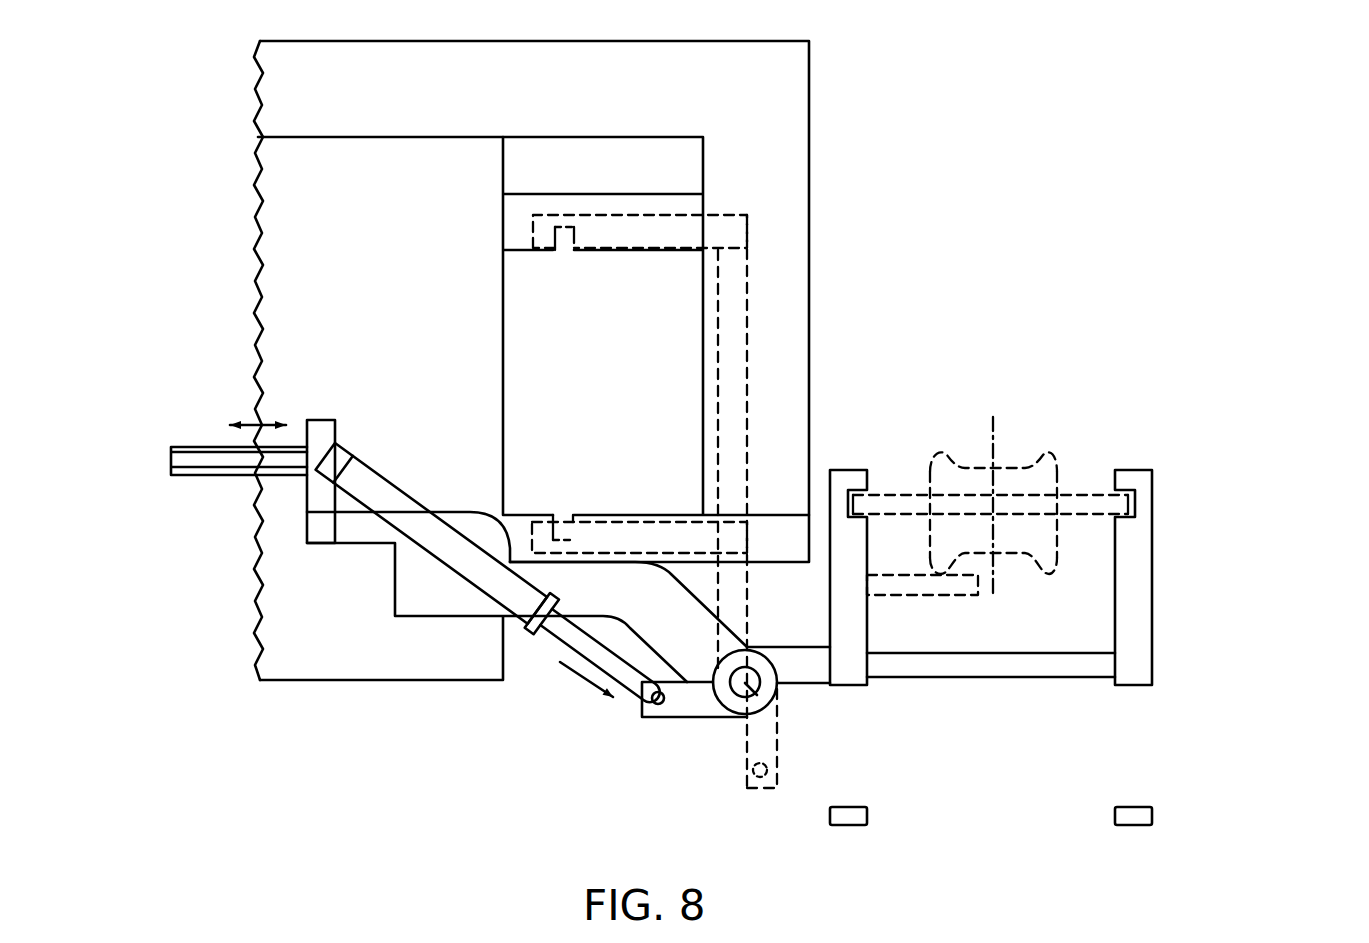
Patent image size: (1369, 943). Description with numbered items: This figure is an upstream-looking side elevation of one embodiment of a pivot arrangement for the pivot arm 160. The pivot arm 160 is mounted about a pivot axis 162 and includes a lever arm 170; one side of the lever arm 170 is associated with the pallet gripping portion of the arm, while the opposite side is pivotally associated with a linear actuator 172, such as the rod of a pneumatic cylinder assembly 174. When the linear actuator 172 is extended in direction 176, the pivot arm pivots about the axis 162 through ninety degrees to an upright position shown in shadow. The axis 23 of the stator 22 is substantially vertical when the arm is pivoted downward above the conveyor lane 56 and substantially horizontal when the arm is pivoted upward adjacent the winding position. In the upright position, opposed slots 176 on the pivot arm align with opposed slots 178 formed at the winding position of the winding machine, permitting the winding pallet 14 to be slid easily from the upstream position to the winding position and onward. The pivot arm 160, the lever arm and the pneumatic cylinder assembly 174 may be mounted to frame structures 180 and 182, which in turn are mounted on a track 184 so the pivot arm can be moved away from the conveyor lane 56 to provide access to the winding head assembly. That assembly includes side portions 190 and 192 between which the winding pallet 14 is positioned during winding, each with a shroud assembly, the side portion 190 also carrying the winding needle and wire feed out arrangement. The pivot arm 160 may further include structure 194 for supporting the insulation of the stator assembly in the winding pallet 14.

The winding pallet 14 is at (878, 490).
The stator 22 is at (1058, 572).
The axis of the stator 23 is at (1000, 427).
The conveyor lane 56 is at (1195, 788).
The pivot arm 160 is at (1154, 555).
The pivot axis 162 is at (777, 690).
The lever arm 170 is at (683, 718).
The linear actuator 172 is at (565, 647).
The pneumatic cylinder assembly 174 is at (393, 493).
The direction / opposed slots 176 is at (598, 690).
The opposed slots 178 is at (555, 252).
The frame structure 180 is at (323, 420).
The frame structure 182 is at (398, 567).
The track 184 is at (220, 442).
The side portion of winding head assembly 190 is at (453, 163).
The side portion of winding head assembly 192 is at (809, 136).
The insulation supporting structure 194 is at (917, 597).